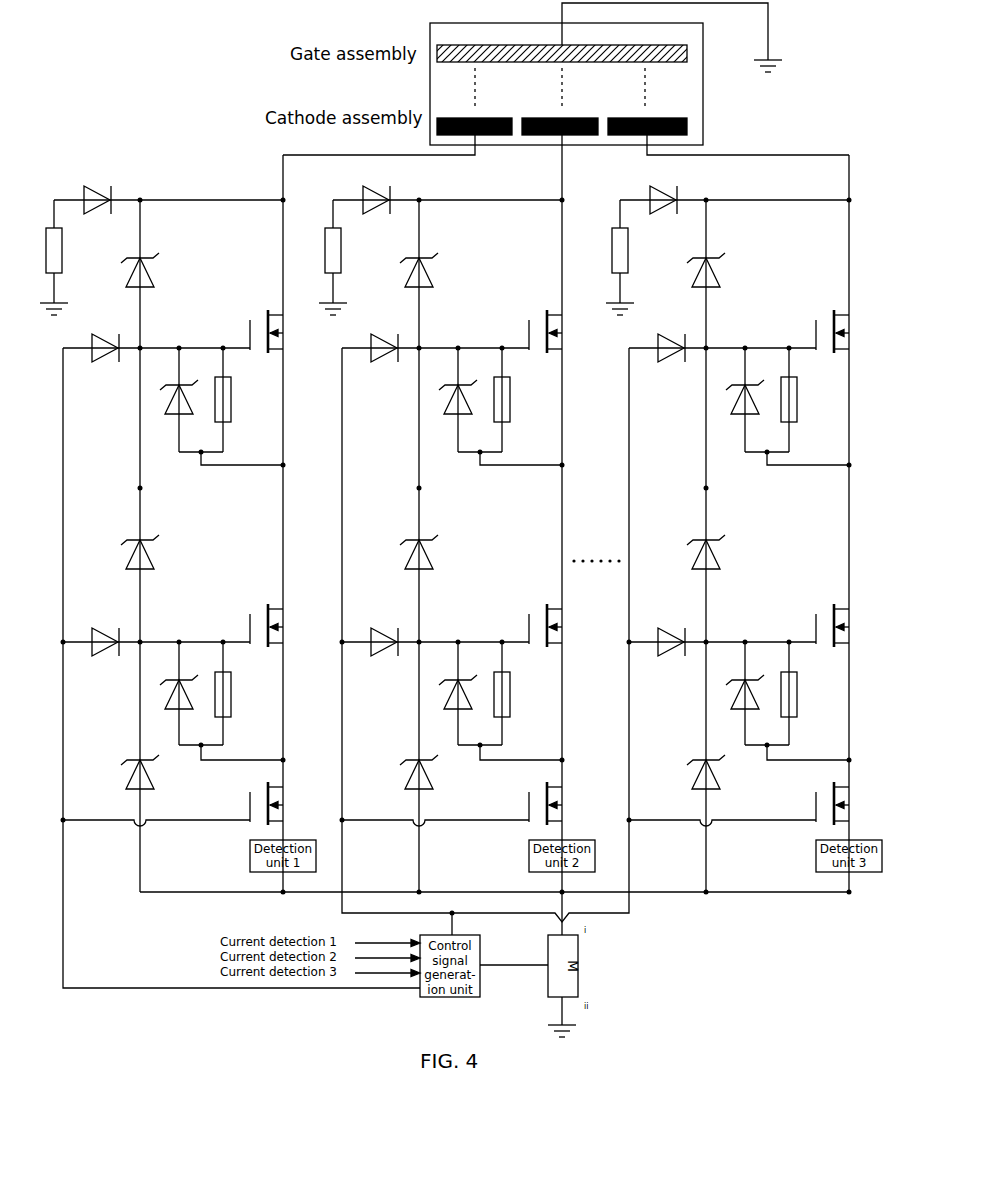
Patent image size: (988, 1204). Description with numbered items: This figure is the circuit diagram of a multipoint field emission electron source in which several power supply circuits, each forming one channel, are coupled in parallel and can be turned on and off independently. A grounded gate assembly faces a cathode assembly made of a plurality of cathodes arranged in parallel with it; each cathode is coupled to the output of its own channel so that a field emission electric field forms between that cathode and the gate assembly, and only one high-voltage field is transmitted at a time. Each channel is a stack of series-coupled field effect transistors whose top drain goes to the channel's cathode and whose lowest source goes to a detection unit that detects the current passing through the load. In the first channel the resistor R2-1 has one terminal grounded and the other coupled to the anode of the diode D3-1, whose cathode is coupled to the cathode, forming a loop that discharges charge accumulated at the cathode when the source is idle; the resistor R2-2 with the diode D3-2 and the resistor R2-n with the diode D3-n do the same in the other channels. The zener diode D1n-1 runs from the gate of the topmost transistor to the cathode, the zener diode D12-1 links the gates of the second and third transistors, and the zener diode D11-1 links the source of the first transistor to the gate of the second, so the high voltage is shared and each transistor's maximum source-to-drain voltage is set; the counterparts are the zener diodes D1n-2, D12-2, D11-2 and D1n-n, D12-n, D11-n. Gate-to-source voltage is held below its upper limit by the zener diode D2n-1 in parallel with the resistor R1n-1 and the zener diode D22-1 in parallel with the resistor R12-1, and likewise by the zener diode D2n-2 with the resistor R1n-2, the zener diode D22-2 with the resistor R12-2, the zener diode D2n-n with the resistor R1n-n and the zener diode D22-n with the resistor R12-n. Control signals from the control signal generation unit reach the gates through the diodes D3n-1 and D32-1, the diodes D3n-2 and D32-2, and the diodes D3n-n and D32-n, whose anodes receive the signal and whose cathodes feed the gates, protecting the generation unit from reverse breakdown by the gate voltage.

The diode D3-1 is at (101, 211).
The resistor R2-1 is at (68, 257).
The zener diode D1n-1 is at (159, 270).
The diode D3n-1 is at (101, 361).
The zener diode D2n-1 is at (179, 400).
The resistor R1n-1 is at (242, 400).
The zener diode D12-1 is at (162, 552).
The diode D32-1 is at (102, 655).
The zener diode D22-1 is at (180, 693).
The resistor R12-1 is at (242, 693).
The zener diode D11-1 is at (162, 775).
The diode D3-2 is at (380, 211).
The resistor R2-2 is at (347, 257).
The zener diode D1n-2 is at (438, 270).
The diode D3n-2 is at (380, 361).
The zener diode D2n-2 is at (458, 400).
The resistor R1n-2 is at (521, 400).
The zener diode D12-2 is at (441, 552).
The diode D32-2 is at (381, 655).
The zener diode D22-2 is at (459, 693).
The resistor R12-2 is at (521, 693).
The zener diode D11-2 is at (441, 775).
The diode D3-n is at (667, 211).
The resistor R2-n is at (634, 257).
The zener diode D1n-n is at (725, 270).
The diode D3n-n is at (667, 361).
The zener diode D2n-n is at (745, 400).
The resistor R1n-n is at (807, 400).
The zener diode D12-n is at (728, 552).
The diode D32-n is at (667, 655).
The zener diode D22-n is at (745, 693).
The resistor R12-n is at (808, 693).
The zener diode D11-n is at (728, 775).